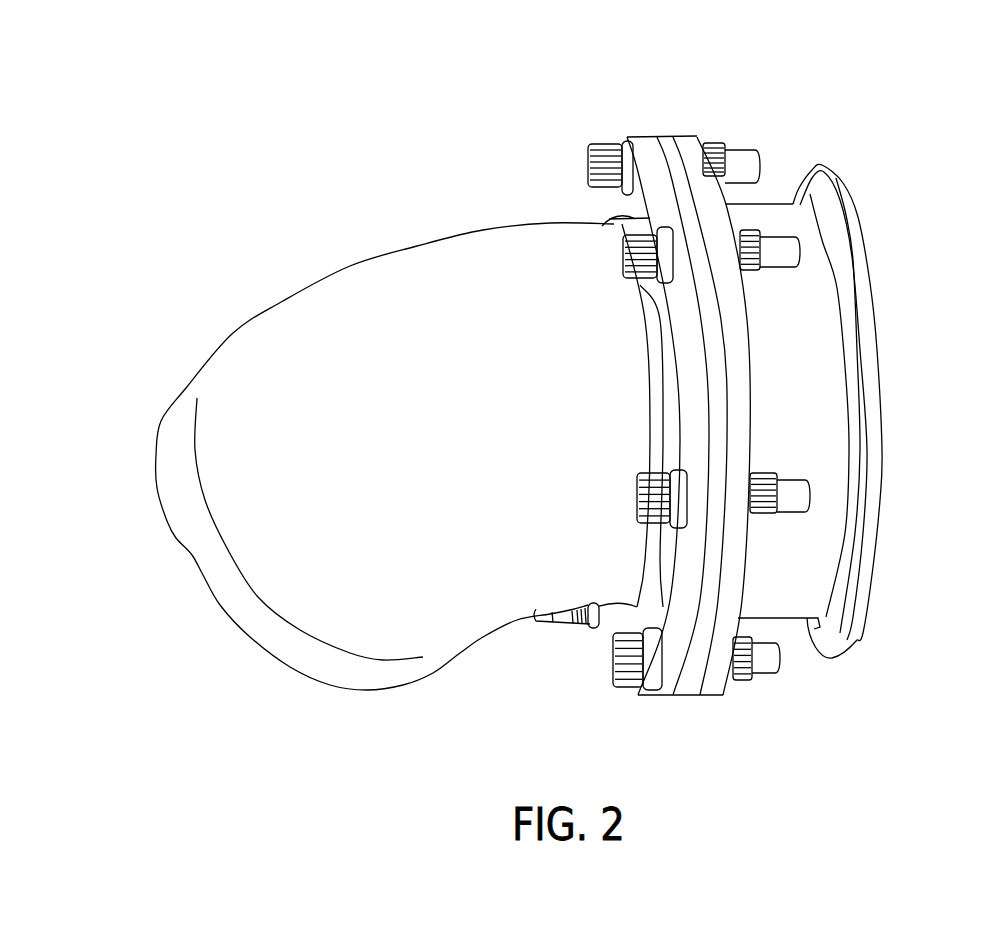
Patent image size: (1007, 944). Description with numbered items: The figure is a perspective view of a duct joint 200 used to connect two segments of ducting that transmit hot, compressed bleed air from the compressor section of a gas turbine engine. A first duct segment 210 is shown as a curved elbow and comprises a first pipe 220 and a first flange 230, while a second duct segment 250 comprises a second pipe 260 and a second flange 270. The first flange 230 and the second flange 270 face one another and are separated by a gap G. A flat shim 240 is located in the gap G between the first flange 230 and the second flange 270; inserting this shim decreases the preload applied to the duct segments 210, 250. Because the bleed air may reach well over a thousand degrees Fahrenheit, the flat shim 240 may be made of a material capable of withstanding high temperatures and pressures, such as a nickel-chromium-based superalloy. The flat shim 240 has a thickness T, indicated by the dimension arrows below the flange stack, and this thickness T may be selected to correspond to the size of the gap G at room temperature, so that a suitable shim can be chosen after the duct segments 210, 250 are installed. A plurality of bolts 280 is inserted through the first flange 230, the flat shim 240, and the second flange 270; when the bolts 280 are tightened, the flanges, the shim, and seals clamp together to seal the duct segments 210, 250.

The duct joint 200 is at (527, 104).
The first duct segment 210 is at (353, 257).
The first pipe 220 is at (300, 350).
The first flange 230 is at (648, 212).
The flat shim 240 is at (673, 163).
The second duct segment 250 is at (878, 332).
The second pipe 260 is at (810, 417).
The second flange 270 is at (750, 433).
The bolts 280 is at (608, 667).
The gap G is at (659, 126).
The thickness T is at (640, 717).